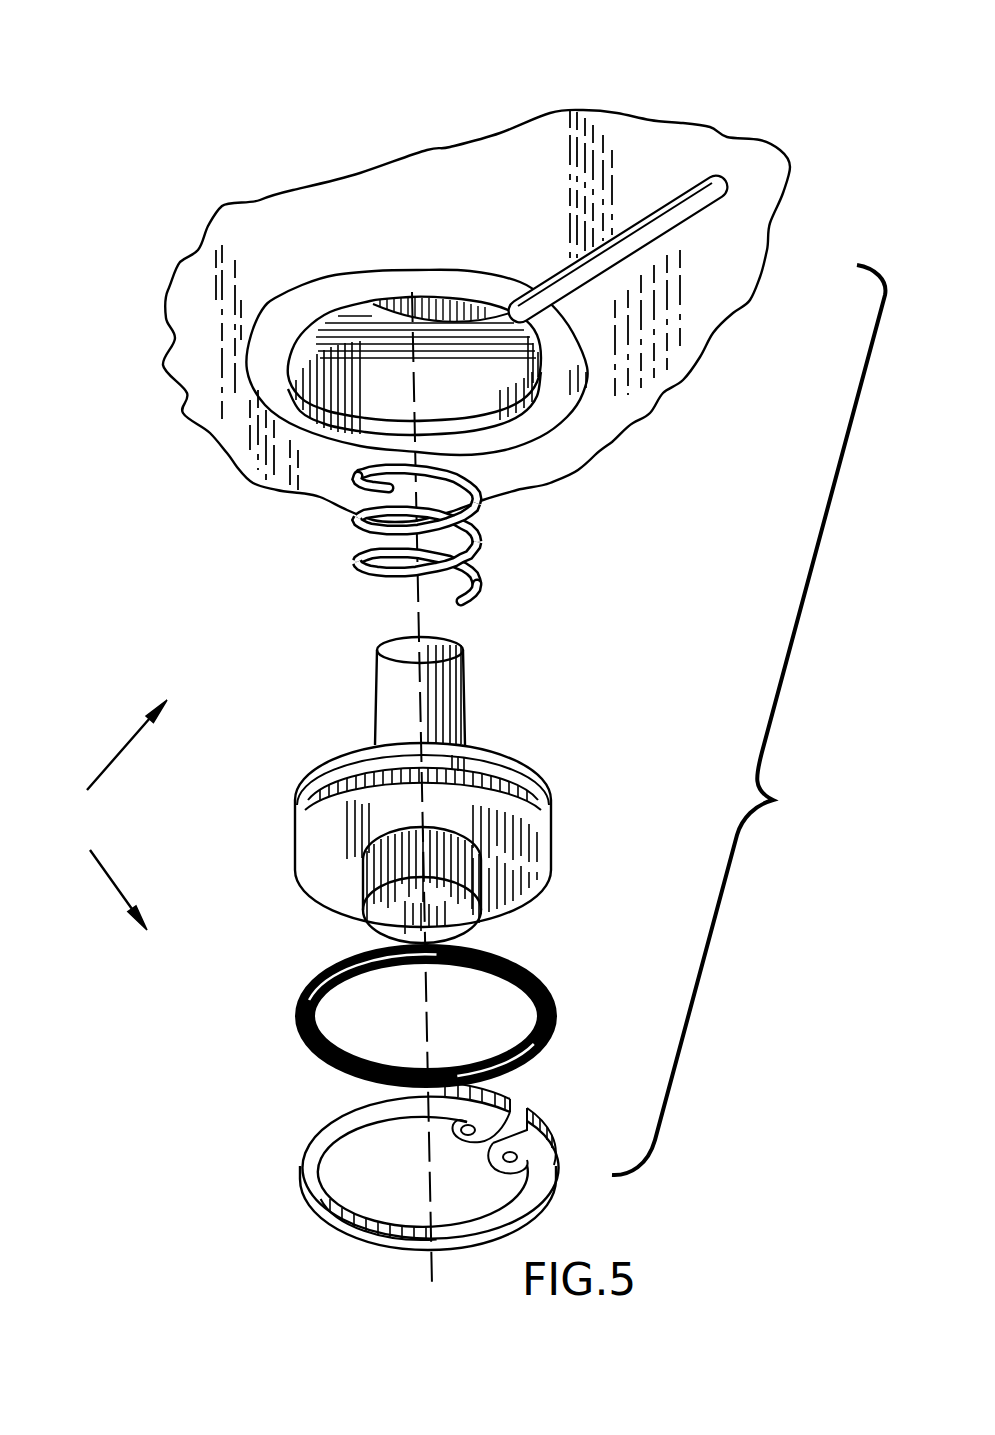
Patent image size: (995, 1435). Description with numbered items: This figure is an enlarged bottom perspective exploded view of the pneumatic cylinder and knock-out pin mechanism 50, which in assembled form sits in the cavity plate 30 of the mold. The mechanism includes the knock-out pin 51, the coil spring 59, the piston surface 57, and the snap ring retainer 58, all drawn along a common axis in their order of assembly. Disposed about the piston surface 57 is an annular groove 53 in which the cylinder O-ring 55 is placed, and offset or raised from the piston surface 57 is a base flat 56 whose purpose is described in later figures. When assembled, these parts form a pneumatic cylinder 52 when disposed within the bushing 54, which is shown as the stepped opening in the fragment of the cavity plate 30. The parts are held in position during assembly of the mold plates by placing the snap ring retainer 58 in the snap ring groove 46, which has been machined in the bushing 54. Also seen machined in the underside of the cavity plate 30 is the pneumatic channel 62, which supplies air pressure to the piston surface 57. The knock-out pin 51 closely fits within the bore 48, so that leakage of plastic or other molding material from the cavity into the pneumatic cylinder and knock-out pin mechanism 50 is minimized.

The cavity plate 30 is at (380, 197).
The pneumatic channel 62 is at (715, 178).
The bore 48 is at (393, 317).
The bushing 54 is at (570, 383).
The snap ring groove 46 is at (355, 427).
The coil spring 59 is at (478, 528).
The knock-out pin 51 is at (463, 693).
The annular groove 53 is at (540, 790).
The piston surface 57 is at (535, 888).
The base flat 56 is at (390, 910).
The cylinder O-ring 55 is at (555, 995).
The snap ring retainer 58 is at (305, 1187).
The pneumatic cylinder 52 is at (748, 720).
The pneumatic cylinder and knock-out pin mechanism 50 is at (110, 815).